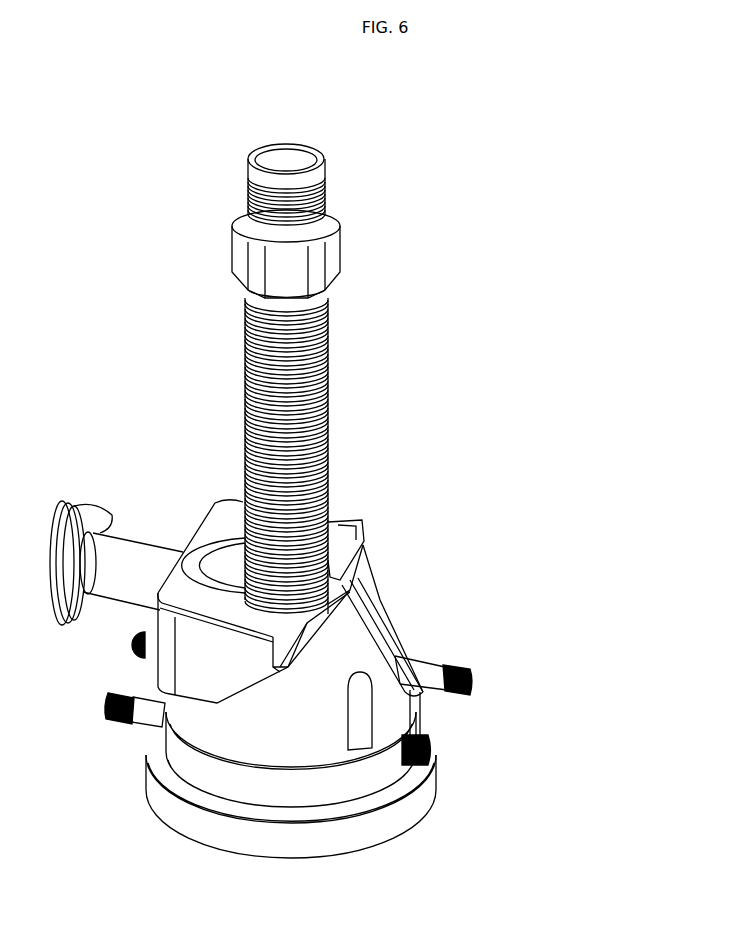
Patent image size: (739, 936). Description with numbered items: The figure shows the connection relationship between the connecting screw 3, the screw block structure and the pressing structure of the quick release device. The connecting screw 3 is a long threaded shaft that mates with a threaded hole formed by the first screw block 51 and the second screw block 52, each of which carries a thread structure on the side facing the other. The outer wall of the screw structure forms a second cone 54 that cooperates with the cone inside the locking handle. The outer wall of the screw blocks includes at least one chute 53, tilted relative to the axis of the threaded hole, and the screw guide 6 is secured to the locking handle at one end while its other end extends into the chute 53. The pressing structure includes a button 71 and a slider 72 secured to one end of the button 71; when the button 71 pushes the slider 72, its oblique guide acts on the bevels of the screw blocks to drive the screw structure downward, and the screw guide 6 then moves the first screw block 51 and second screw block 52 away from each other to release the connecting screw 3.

The connecting screw 3 is at (316, 441).
The screw guide 6 is at (430, 675).
The first screw block 51 is at (373, 610).
The second screw block 52 is at (332, 782).
The chute 53 is at (367, 705).
The second cone 54 is at (268, 735).
The button 71 is at (133, 560).
The slider 72 is at (215, 525).